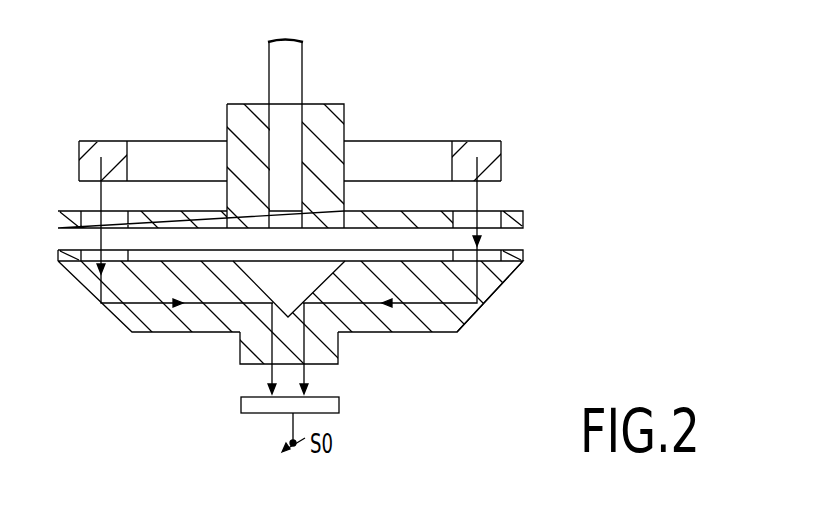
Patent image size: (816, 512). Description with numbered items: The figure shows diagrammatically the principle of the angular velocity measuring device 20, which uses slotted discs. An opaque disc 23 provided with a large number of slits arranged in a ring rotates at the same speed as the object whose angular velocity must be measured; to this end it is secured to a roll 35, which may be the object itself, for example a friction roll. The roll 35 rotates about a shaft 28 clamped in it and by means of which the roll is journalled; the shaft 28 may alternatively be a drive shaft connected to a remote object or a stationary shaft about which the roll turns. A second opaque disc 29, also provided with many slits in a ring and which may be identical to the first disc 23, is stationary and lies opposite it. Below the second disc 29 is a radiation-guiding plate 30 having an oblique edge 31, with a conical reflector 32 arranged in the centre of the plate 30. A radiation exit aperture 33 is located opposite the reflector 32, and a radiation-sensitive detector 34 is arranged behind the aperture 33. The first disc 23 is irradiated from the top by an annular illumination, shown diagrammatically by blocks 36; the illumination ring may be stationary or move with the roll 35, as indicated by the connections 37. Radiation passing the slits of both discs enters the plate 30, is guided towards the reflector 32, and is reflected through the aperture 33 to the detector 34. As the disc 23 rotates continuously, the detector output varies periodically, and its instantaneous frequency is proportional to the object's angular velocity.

The angular velocity measuring device 20 is at (107, 63).
The opaque disc 23 is at (525, 214).
The shaft 28 is at (268, 55).
The second opaque disc 29 is at (525, 254).
The radiation-guiding plate 30 is at (448, 322).
The oblique edge 31 is at (503, 281).
The conical reflector 32 is at (267, 280).
The radiation exit aperture 33 is at (330, 366).
The radiation-sensitive detector 34 is at (339, 401).
The roll 35 is at (327, 118).
The blocks of the illumination ring 36 is at (103, 142).
The connections 37 is at (165, 153).